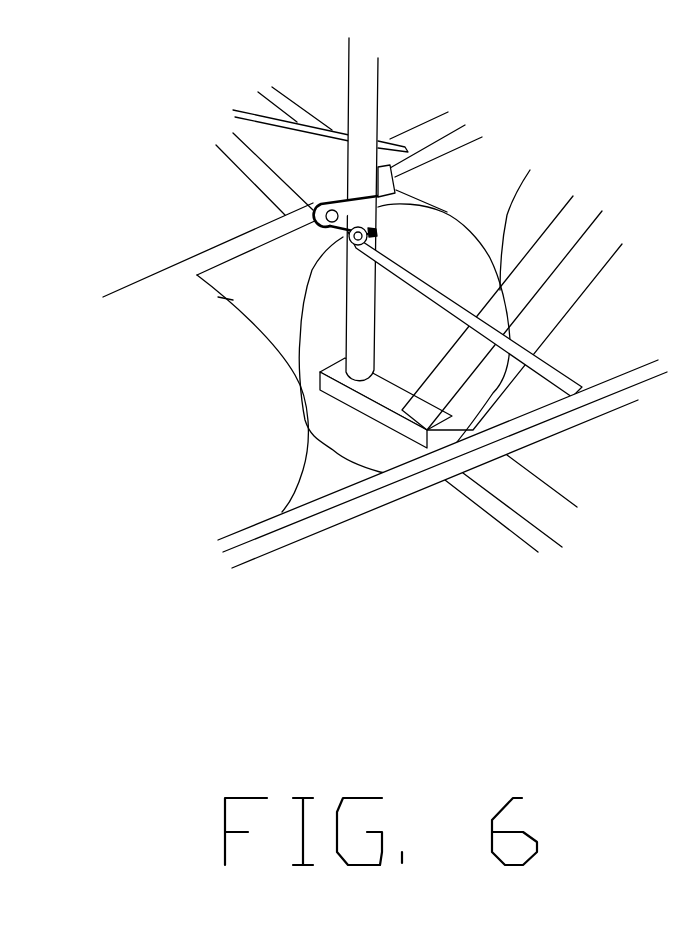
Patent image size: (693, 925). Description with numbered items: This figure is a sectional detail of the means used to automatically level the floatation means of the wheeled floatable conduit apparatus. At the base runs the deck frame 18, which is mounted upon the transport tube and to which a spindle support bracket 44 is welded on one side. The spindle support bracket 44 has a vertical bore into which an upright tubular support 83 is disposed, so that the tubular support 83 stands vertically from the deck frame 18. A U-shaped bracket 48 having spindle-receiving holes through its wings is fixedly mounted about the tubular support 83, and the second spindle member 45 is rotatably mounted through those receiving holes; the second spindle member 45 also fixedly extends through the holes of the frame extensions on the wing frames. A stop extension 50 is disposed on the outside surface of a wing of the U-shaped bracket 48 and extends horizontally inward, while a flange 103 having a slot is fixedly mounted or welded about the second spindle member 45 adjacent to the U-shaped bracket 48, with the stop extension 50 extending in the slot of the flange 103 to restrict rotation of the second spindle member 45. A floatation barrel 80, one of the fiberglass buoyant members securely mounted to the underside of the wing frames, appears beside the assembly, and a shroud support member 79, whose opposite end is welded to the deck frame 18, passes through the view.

The deck frame 18 is at (278, 553).
The spindle support bracket 44 is at (492, 520).
The second spindle member 45 is at (250, 167).
The U-shaped bracket 48 is at (342, 193).
The stop extension 50 is at (333, 240).
The shroud support member 79 is at (573, 293).
The floatation barrel 80 is at (507, 217).
The upright tubular support 83 is at (349, 108).
The flange 103 is at (378, 232).